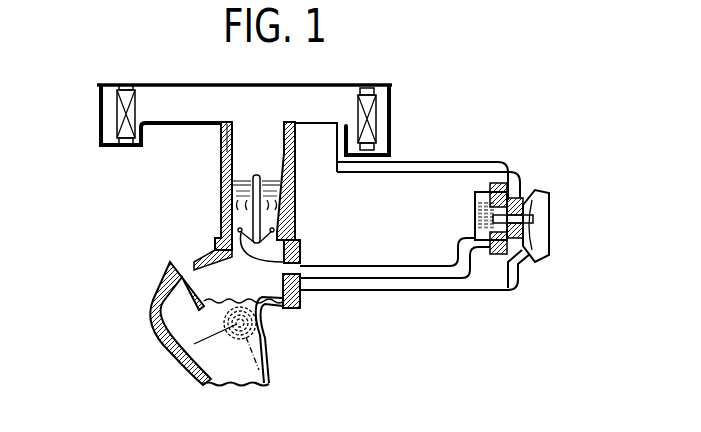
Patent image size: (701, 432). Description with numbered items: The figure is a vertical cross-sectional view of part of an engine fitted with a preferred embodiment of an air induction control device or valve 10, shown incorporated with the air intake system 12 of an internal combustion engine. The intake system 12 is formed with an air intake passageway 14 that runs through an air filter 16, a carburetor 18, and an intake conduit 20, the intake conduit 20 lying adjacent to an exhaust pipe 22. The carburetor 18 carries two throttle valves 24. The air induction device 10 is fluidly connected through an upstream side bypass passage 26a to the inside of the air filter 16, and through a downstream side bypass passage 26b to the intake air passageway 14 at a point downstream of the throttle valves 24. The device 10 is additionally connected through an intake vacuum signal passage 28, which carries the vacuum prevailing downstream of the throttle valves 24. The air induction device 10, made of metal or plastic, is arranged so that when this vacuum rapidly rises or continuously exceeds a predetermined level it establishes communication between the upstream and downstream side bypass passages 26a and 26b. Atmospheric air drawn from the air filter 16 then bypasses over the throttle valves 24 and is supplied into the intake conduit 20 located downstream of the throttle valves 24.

The air induction control device 10 is at (549, 227).
The air intake system 12 is at (140, 218).
The air intake passageway 14 is at (228, 158).
The air filter 16 is at (117, 149).
The carburetor 18 is at (297, 198).
The intake conduit 20 is at (202, 259).
The exhaust pipe 22 is at (192, 362).
The throttle valves 24 is at (296, 233).
The upstream side bypass passage 26a is at (437, 161).
The downstream side bypass passage 26b is at (425, 291).
The intake vacuum signal passage 28 is at (515, 289).